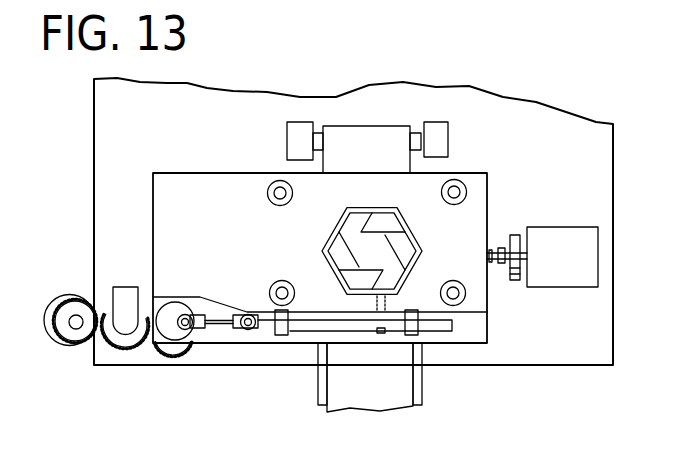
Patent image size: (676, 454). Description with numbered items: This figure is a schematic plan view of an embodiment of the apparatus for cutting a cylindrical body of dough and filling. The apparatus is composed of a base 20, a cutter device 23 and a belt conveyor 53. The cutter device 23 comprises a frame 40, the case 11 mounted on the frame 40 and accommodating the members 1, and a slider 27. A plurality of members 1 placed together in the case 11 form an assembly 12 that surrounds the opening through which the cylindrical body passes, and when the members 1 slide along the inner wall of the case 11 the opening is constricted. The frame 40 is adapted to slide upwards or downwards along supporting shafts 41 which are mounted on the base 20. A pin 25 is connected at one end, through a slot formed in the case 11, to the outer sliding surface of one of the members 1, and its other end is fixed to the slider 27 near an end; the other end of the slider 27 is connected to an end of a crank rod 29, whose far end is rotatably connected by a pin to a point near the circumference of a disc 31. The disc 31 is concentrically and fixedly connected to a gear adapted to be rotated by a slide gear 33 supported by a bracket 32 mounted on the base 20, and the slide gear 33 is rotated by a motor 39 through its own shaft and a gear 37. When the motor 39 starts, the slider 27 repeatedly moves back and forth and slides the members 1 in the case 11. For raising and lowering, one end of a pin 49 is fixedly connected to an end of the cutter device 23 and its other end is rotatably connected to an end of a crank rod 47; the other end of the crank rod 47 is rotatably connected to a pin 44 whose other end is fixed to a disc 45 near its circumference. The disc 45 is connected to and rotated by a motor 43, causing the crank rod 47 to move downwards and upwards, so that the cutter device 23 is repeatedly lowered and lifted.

The member 1 is at (388, 222).
The case 11 is at (418, 258).
The assembly 12 is at (427, 218).
The base 20 is at (597, 367).
The cutter device 23 is at (572, 267).
The pin 25 is at (390, 313).
The slider 27 is at (302, 325).
The crank rod 29 is at (221, 327).
The disc 31 is at (173, 333).
The bracket 32 is at (127, 300).
The slide gear 33 is at (137, 351).
The gear 37 is at (72, 315).
The motor 39 is at (65, 346).
The frame 40 is at (167, 172).
The supporting shafts 41 is at (278, 181).
The motor 43 is at (587, 268).
The pin 44 is at (506, 247).
The disc 45 is at (522, 280).
The crank rod 47 is at (503, 264).
The pin 49 is at (490, 264).
The belt conveyor 53 is at (366, 112).